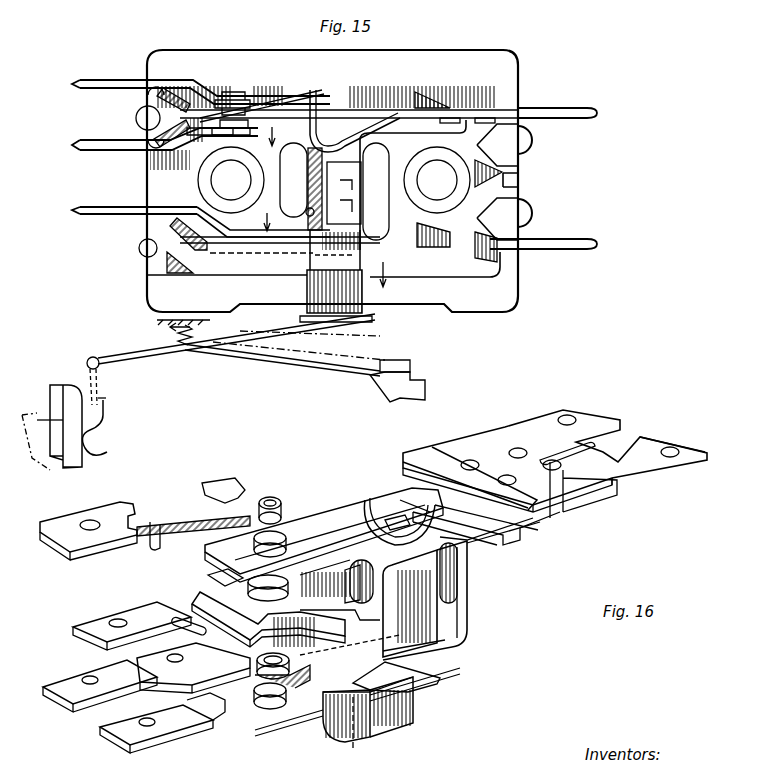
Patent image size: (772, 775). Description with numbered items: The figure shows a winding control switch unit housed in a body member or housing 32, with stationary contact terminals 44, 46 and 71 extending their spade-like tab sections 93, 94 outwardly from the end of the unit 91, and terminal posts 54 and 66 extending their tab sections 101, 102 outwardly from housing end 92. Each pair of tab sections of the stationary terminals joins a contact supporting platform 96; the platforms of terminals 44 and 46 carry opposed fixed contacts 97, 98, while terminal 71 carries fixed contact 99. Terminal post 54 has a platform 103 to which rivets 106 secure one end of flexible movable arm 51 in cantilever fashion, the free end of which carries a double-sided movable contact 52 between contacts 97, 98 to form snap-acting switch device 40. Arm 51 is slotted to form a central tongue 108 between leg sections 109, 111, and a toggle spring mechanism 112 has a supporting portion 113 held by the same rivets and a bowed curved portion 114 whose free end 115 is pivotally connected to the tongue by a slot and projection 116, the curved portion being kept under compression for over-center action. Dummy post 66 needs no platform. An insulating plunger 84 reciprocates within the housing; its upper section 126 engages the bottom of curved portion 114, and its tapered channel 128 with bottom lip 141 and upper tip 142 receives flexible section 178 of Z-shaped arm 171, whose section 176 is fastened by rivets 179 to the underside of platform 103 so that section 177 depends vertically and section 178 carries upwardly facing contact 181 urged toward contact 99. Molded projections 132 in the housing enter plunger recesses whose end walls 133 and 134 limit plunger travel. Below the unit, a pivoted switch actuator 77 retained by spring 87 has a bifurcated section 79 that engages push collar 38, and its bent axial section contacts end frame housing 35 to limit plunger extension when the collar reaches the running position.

In FIG. 15, the housing 32 is at (465, 50).
In FIG. 15, the end frame housing 35 is at (418, 388).
In FIG. 15, the push collar 38 is at (47, 420).
In FIG. 15, the switch device 40 is at (321, 75).
In FIG. 15, the stationary contact terminal 44 is at (140, 82).
In FIG. 16, the stationary contact terminal 44 is at (162, 518).
In FIG. 15, the stationary contact terminal 46 is at (140, 142).
In FIG. 16, the stationary contact terminal 46 is at (190, 600).
In FIG. 15, the movable arm 51 is at (345, 122).
In FIG. 16, the movable contact 52 is at (250, 550).
In FIG. 15, the terminal post 54 is at (530, 108).
In FIG. 16, the terminal post 54 is at (580, 476).
In FIG. 15, the terminal post 66 is at (572, 249).
In FIG. 15, the stationary contact terminal 71 is at (145, 207).
In FIG. 16, the stationary contact terminal 71 is at (225, 716).
In FIG. 15, the switch actuator 77 is at (137, 360).
In FIG. 15, the bifurcated section 79 is at (108, 435).
In FIG. 15, the plunger 84 is at (362, 306).
In FIG. 16, the plunger 84 is at (413, 705).
In FIG. 15, the spring 87 is at (178, 333).
In FIG. 15, the end of the unit 91 is at (160, 278).
In FIG. 15, the housing end 92 is at (522, 163).
In FIG. 16, the tab section 93 is at (110, 608).
In FIG. 16, the tab section 94 is at (190, 665).
In FIG. 16, the contact supporting platform 96 is at (255, 498).
In FIG. 16, the fixed contact 97 is at (283, 505).
In FIG. 16, the fixed contact 98 is at (228, 580).
In FIG. 16, the fixed contact 99 is at (282, 700).
In FIG. 16, the tab section 101 is at (600, 428).
In FIG. 16, the tab section 102 is at (682, 456).
In FIG. 15, the platform 103 is at (495, 110).
In FIG. 15, the rivets 106 is at (450, 118).
In FIG. 16, the rivets 106 is at (507, 477).
In FIG. 16, the central tongue 108 is at (325, 530).
In FIG. 15, the leg section 109 is at (278, 227).
In FIG. 16, the leg section 109 is at (315, 512).
In FIG. 16, the leg section 111 is at (500, 508).
In FIG. 16, the toggle spring mechanism 112 is at (480, 535).
In FIG. 16, the supporting portion 113 is at (450, 495).
In FIG. 16, the curved portion 114 is at (415, 537).
In FIG. 16, the free end 115 is at (372, 500).
In FIG. 16, the slot and projection 116 is at (410, 518).
In FIG. 16, the upper section 126 is at (326, 603).
In FIG. 15, the tapered channel 128 is at (395, 252).
In FIG. 15, the molded projections 132 is at (245, 203).
In FIG. 15, the end wall 133 is at (302, 180).
In FIG. 15, the end wall 134 is at (307, 216).
In FIG. 15, the bottom lip 141 is at (307, 277).
In FIG. 16, the bottom lip 141 is at (354, 731).
In FIG. 15, the upper tip 142 is at (338, 215).
In FIG. 16, the upper tip 142 is at (440, 676).
In FIG. 15, the flexible arm 171 is at (260, 243).
In FIG. 16, the flexible arm 171 is at (318, 718).
In FIG. 16, the section 176 is at (548, 520).
In FIG. 16, the section 177 is at (463, 600).
In FIG. 16, the section 178 is at (443, 645).
In FIG. 16, the rivets 179 is at (552, 462).
In FIG. 16, the contact 181 is at (273, 690).